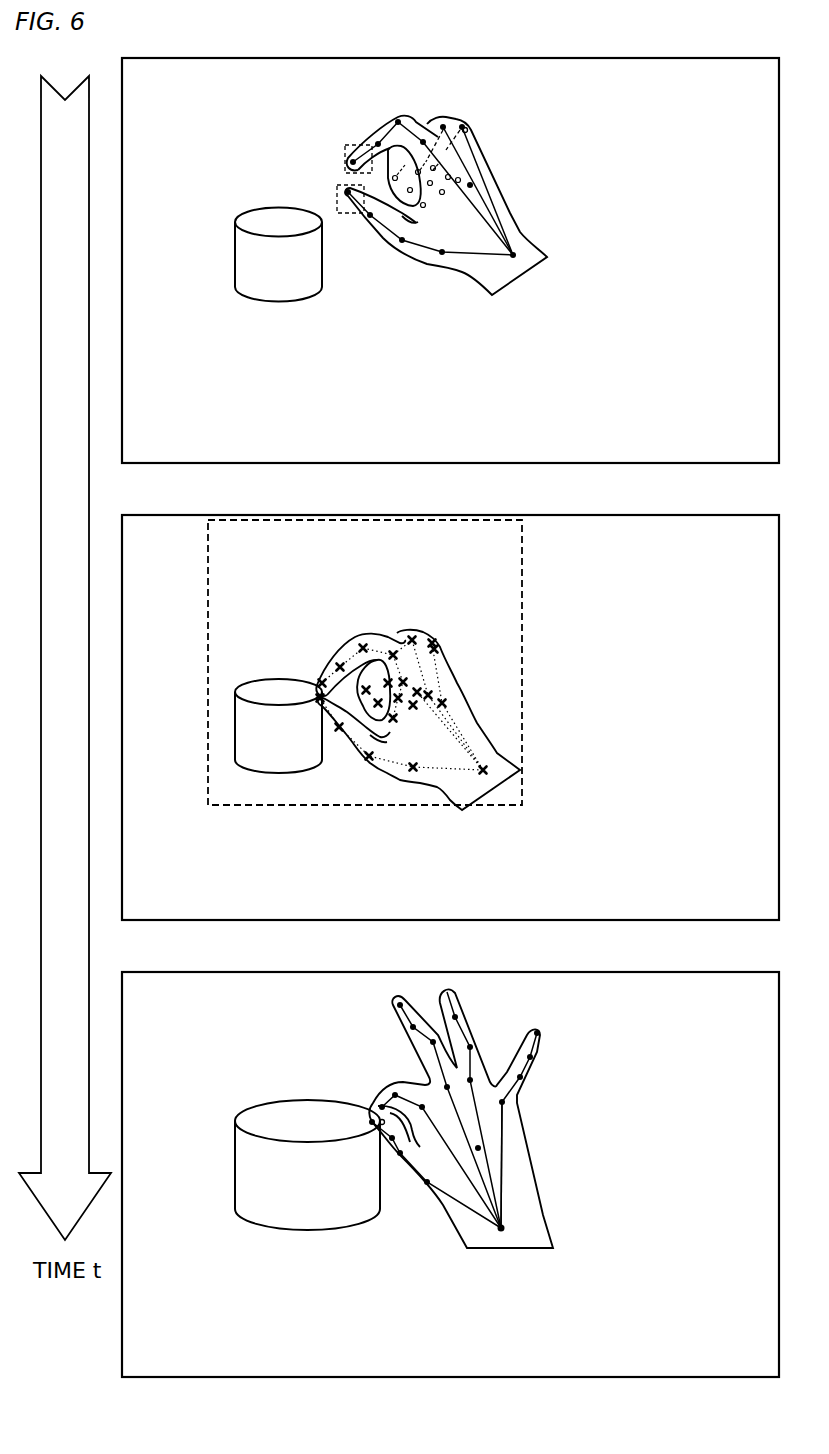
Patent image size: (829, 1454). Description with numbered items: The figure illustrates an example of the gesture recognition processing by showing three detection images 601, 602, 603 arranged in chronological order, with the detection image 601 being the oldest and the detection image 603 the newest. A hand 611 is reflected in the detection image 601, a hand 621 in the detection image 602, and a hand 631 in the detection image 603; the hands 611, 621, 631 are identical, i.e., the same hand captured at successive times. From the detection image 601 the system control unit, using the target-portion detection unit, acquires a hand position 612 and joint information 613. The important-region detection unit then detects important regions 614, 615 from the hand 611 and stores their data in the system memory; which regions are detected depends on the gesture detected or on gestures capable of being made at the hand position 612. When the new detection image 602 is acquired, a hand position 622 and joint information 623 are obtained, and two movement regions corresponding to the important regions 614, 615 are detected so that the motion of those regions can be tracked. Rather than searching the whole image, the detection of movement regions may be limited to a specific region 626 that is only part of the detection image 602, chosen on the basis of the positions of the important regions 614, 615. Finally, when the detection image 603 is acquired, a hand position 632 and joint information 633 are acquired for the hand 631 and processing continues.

The detection image 601 is at (708, 57).
The detection image 602 is at (708, 514).
The detection image 603 is at (708, 971).
The hand 611 is at (470, 143).
The hand position 612 is at (472, 182).
The joint information 613 is at (492, 200).
The important region 614 is at (345, 147).
The important region 615 is at (337, 192).
The hand 621 is at (446, 663).
The hand position 622 is at (447, 692).
The joint information 623 is at (462, 720).
The specific region 626 is at (522, 607).
The hand 631 is at (545, 1213).
The hand position 632 is at (478, 1148).
The joint information 633 is at (502, 1158).